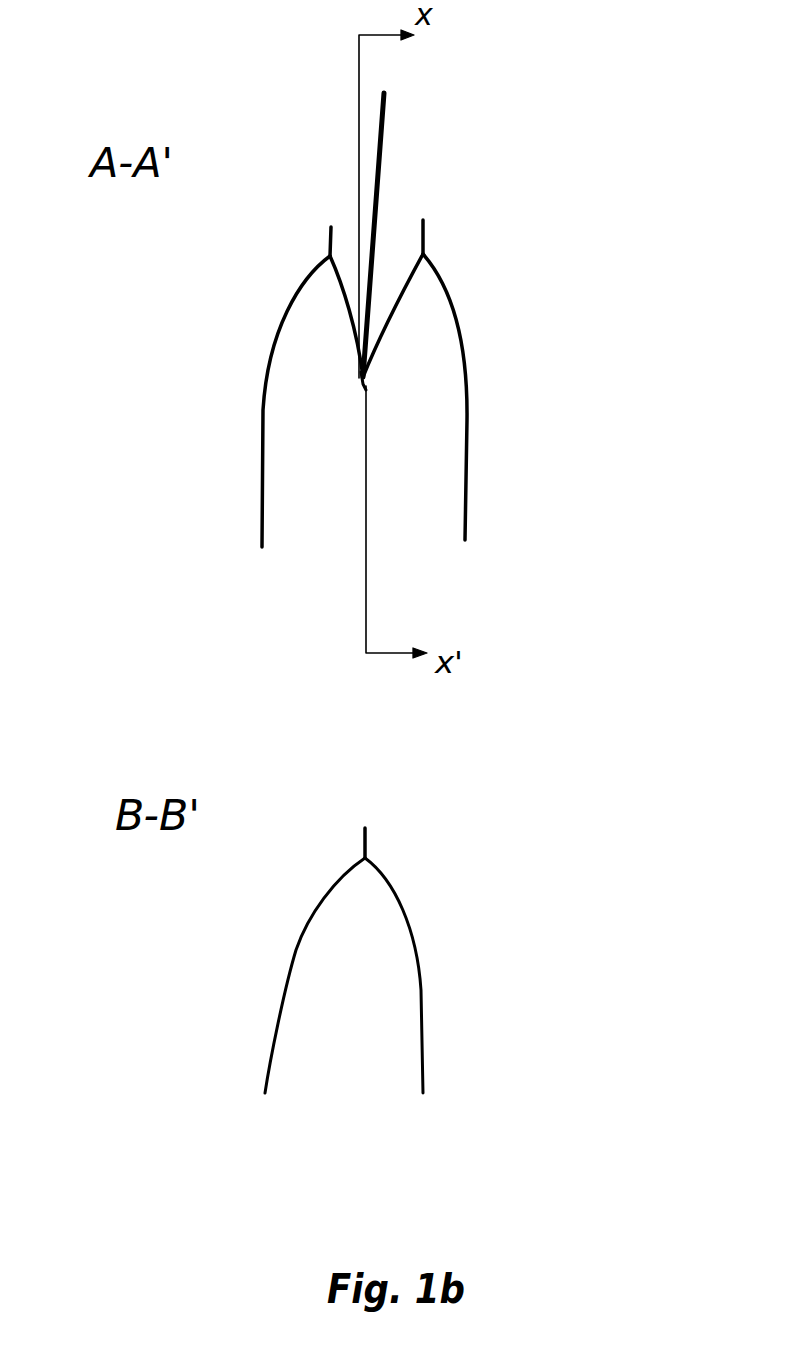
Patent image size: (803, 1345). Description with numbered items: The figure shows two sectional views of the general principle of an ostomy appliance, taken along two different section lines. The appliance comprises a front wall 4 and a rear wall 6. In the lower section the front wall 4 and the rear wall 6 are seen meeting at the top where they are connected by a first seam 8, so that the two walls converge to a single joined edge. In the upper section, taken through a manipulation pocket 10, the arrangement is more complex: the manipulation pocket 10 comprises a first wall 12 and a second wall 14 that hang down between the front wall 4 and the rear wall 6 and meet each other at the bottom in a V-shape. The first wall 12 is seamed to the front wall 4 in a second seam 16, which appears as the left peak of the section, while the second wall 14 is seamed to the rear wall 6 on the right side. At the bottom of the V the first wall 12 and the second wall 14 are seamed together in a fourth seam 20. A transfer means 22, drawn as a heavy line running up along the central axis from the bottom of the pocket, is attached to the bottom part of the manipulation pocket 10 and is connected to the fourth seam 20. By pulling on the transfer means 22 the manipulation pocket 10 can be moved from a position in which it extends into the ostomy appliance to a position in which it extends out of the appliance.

The front wall 4 is at (250, 413).
The rear wall 6 is at (470, 465).
The first seam 8 is at (372, 838).
The manipulation pocket 10 is at (425, 230).
The first wall 12 is at (353, 325).
The second wall 14 is at (388, 327).
The second seam 16 is at (327, 242).
The fourth seam 20 is at (366, 394).
The transfer means 22 is at (388, 128).